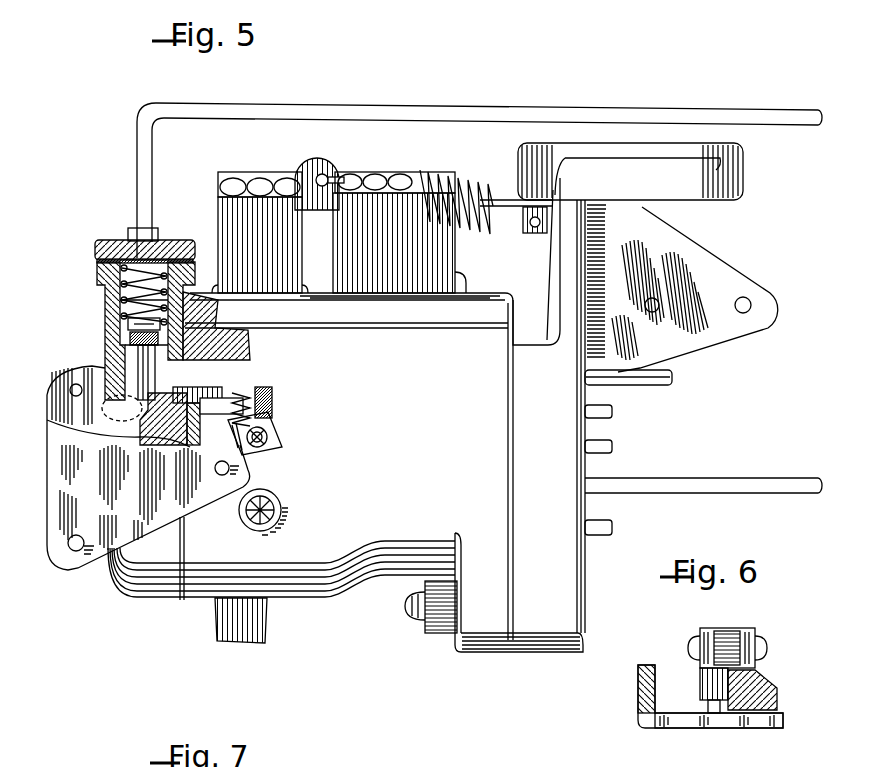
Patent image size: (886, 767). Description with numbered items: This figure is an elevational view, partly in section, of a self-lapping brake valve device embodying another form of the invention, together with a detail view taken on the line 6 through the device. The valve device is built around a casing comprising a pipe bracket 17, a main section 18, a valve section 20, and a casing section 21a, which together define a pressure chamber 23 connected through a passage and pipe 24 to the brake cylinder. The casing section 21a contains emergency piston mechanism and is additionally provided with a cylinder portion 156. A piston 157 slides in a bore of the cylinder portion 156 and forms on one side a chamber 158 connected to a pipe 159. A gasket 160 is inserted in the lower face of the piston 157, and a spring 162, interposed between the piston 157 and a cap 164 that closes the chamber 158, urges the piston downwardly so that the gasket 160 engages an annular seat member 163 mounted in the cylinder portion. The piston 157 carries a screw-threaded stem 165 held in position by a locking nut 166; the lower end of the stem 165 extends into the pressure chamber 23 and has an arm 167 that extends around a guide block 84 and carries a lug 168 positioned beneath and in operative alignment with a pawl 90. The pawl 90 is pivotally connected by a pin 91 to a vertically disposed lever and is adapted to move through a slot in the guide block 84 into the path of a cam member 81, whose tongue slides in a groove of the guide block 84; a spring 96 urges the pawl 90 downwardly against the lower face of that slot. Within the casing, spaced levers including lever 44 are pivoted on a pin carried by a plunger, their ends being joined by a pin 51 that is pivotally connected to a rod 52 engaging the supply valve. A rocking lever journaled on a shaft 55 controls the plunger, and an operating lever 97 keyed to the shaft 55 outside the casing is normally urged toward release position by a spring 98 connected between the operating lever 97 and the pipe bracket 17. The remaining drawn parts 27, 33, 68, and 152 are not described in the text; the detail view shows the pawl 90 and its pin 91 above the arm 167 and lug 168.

In FIG. 5, the pipe 159 is at (377, 104).
In FIG. 5, the cap 164 is at (117, 242).
In FIG. 5, the chamber 158 is at (100, 268).
In FIG. 5, the spring 162 is at (165, 260).
In FIG. 5, the annular seat member 163 is at (185, 356).
In FIG. 5, the cylinder portion 156 is at (103, 288).
In FIG. 5, the locking nut 166 is at (106, 306).
In FIG. 5, the piston 157 is at (110, 325).
In FIG. 5, the gasket 160 is at (124, 340).
In FIG. 5, the stem 165 is at (140, 357).
In FIG. 5, the valve section 20 is at (226, 222).
In FIG. 5, the section line 6 is at (194, 372).
In FIG. 5, the casing section 21a is at (118, 580).
In FIG. 5, the cam member 81 is at (138, 440).
In FIG. 5, the arm 167 is at (122, 408).
In FIG. 6, the arm 167 is at (640, 680).
In FIG. 5, the guide block 84 is at (175, 442).
In FIG. 5, the lug 168 is at (196, 442).
In FIG. 6, the lug 168 is at (777, 728).
In FIG. 5, the pawl 90 is at (226, 394).
In FIG. 6, the pawl 90 is at (758, 686).
In FIG. 5, the rod 52 is at (262, 397).
In FIG. 5, the spring 96 is at (262, 413).
In FIG. 5, the lever 44 is at (273, 432).
In FIG. 5, the pin 51 is at (265, 442).
In FIG. 5, the pressure chamber 23 is at (248, 472).
In FIG. 5, the shaft 55 is at (283, 510).
In FIG. 5, the main section 18 is at (378, 565).
In FIG. 5, the operating lever 97 is at (262, 625).
In FIG. 5, the spring 98 is at (478, 220).
In FIG. 5, the pipe bracket 17 is at (588, 600).
In FIG. 5, the pin 27 is at (667, 378).
In FIG. 5, the terminal 33 is at (613, 412).
In FIG. 5, the pipe 24 is at (613, 447).
In FIG. 5, the rod 68 is at (662, 484).
In FIG. 5, the terminal 152 is at (608, 530).
In FIG. 6, the pin 91 is at (758, 645).